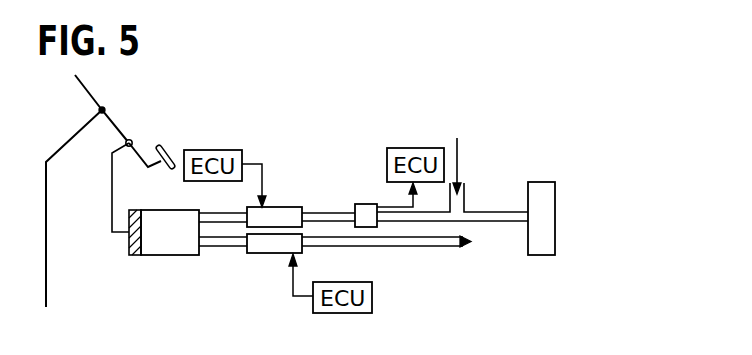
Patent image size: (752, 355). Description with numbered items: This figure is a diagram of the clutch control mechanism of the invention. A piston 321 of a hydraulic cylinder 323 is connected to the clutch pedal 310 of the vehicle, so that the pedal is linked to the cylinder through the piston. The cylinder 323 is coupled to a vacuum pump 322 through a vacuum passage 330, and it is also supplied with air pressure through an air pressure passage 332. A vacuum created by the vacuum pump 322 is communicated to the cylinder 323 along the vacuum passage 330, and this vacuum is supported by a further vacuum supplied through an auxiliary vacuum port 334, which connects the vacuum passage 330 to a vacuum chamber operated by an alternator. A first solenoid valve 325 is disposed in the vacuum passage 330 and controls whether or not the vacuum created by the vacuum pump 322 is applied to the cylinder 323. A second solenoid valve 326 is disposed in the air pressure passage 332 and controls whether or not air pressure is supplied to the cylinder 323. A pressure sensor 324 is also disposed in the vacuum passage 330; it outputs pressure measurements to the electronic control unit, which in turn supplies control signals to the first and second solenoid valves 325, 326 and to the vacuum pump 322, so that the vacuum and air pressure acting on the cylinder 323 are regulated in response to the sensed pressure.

The clutch pedal 310 is at (164, 147).
The piston 321 is at (110, 219).
The vacuum pump 322 is at (548, 221).
The hydraulic cylinder 323 is at (182, 247).
The pressure sensor 324 is at (367, 205).
The first solenoid valve 325 is at (288, 206).
The second solenoid valve 326 is at (283, 253).
The vacuum passage 330 is at (470, 212).
The air pressure passage 332 is at (448, 247).
The auxiliary vacuum port 334 is at (463, 182).